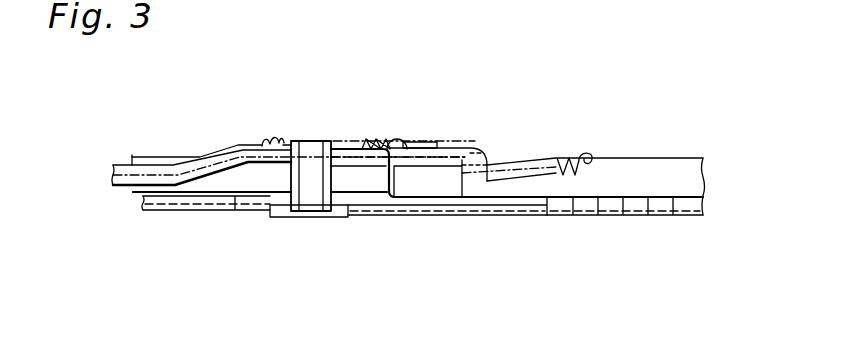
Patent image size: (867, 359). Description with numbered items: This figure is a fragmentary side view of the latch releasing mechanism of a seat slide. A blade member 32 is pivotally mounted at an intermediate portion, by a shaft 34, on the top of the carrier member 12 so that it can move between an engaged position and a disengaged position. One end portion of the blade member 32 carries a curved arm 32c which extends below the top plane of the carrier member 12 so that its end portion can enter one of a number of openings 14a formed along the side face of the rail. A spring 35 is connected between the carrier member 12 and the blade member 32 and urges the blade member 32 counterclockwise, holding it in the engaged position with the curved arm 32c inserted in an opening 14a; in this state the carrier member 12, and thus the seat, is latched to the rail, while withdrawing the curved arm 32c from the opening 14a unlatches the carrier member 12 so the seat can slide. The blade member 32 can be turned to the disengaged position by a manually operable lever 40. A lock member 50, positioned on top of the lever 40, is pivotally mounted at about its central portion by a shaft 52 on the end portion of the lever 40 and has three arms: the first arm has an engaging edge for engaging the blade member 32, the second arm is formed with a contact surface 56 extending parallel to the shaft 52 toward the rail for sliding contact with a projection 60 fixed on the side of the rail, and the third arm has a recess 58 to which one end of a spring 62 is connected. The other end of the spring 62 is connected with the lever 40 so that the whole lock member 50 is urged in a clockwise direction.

The carrier member 12 is at (625, 173).
The openings 14a is at (600, 215).
The blade member 32 is at (397, 205).
The curved arm 32c is at (512, 215).
The shaft 34 is at (420, 142).
The spring 35 is at (567, 158).
The manually operable lever 40 is at (128, 168).
The lock member 50 is at (348, 140).
The shaft 52 is at (383, 138).
The contact surface 56 is at (310, 190).
The recess 58 is at (436, 7).
The projection 60 is at (280, 212).
The spring 62 is at (285, 142).